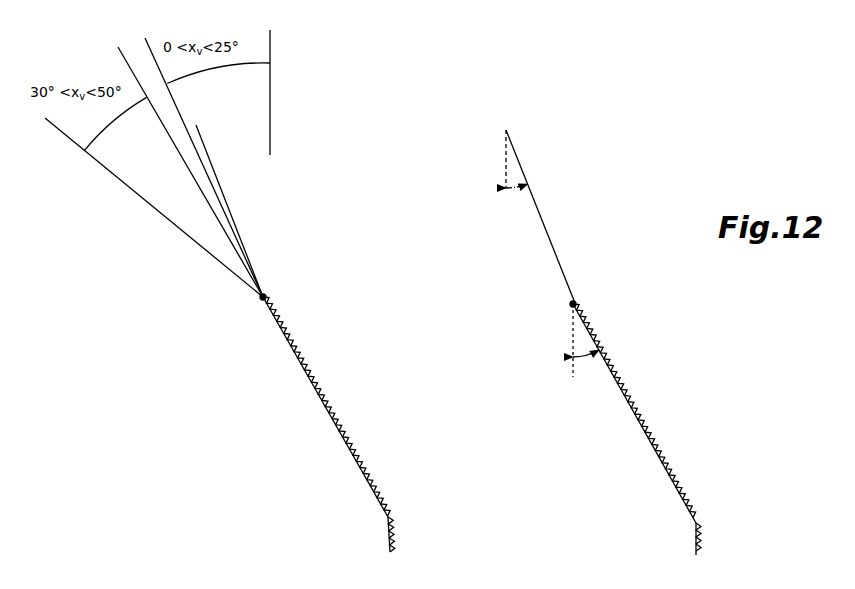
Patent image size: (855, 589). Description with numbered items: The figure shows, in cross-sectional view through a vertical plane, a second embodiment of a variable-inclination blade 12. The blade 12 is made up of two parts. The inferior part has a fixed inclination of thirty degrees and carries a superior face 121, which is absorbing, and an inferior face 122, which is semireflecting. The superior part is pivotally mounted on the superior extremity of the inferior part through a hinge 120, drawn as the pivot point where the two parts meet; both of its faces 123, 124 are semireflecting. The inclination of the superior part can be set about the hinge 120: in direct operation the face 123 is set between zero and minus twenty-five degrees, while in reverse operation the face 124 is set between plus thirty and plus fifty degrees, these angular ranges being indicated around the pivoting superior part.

The blade 12 is at (300, 339).
The hinge 120 is at (260, 297).
The superior face 121 is at (350, 444).
The inferior face 122 is at (357, 463).
The face 123 is at (236, 228).
The face 124 is at (205, 158).